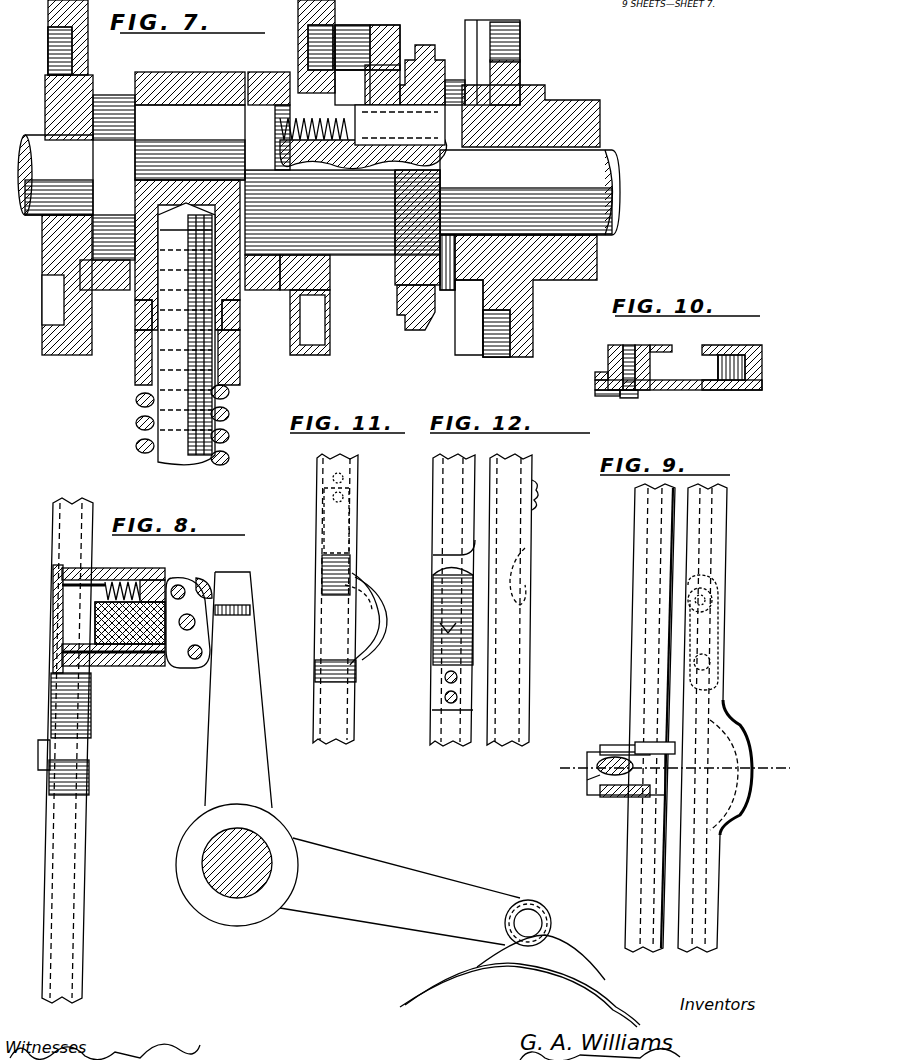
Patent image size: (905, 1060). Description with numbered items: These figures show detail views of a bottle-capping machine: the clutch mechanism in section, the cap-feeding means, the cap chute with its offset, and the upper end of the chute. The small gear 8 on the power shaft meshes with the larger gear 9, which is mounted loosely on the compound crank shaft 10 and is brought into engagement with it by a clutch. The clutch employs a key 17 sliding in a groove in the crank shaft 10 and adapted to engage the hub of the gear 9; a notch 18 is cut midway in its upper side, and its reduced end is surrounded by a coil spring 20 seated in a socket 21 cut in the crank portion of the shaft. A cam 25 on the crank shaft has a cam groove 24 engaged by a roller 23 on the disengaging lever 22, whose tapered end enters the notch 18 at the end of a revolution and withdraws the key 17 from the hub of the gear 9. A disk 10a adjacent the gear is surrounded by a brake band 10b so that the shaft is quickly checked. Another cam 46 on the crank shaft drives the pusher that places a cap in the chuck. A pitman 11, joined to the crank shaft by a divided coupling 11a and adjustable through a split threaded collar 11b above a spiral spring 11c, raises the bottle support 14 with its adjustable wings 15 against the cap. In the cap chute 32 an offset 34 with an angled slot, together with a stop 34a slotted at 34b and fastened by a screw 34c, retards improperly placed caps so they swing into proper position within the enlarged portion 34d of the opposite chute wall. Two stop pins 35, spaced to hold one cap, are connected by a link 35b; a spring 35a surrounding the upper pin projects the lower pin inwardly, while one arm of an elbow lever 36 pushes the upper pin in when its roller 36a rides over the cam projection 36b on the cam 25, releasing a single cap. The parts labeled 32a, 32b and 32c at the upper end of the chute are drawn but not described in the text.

In FIG. 8, the small gear 8 is at (245, 852).
In FIG. 7, the larger gear 9 is at (527, 125).
In FIG. 7, the compound crank shaft 10 is at (319, 180).
In FIG. 9, the compound crank shaft 10 is at (585, 764).
In FIG. 7, the disk 10a is at (392, 295).
In FIG. 7, the brake band 10b is at (420, 322).
In FIG. 7, the pitman 11 is at (170, 450).
In FIG. 7, the divided coupling 11a is at (200, 70).
In FIG. 7, the split threaded collar 11b is at (135, 325).
In FIG. 7, the spiral spring 11c is at (230, 408).
In FIG. 7, the bottle support 14 is at (345, 80).
In FIG. 7, the adjustable wings 15 is at (60, 54).
In FIG. 7, the key 17 is at (495, 95).
In FIG. 7, the notch 18 is at (522, 70).
In FIG. 7, the coil spring 20 is at (300, 92).
In FIG. 7, the socket 21 is at (290, 98).
In FIG. 7, the disengaging lever 22 is at (410, 40).
In FIG. 7, the roller 23 is at (375, 25).
In FIG. 7, the cam groove 24 is at (310, 322).
In FIG. 7, the cam 25 is at (305, 270).
In FIG. 8, the cam 25 is at (477, 996).
In FIG. 11, the cap chute 32 is at (352, 522).
In FIG. 12, the cap chute 32 is at (542, 600).
In FIG. 9, the cap chute 32 is at (680, 537).
In FIG. 11, the bar block 32a is at (324, 566).
In FIG. 11, the spring 32b is at (365, 615).
In FIG. 11, the lug 32c is at (440, 630).
In FIG. 12, the lug 32c is at (530, 552).
In FIG. 10, the offset 34 is at (678, 367).
In FIG. 9, the offset 34 is at (655, 790).
In FIG. 10, the stop 34a is at (606, 378).
In FIG. 9, the stop 34a is at (638, 750).
In FIG. 10, the slot 34b is at (612, 392).
In FIG. 9, the slot 34b is at (600, 772).
In FIG. 10, the screw 34c is at (630, 398).
In FIG. 9, the screw 34c is at (615, 790).
In FIG. 10, the enlarged portion 34d is at (755, 338).
In FIG. 9, the enlarged portion 34d is at (715, 745).
In FIG. 9, the stop pins 35 is at (712, 598).
In FIG. 8, the stop pins 35 is at (55, 592).
In FIG. 8, the spring 35a is at (125, 582).
In FIG. 8, the link 35b is at (205, 568).
In FIG. 8, the elbow lever 36 is at (362, 758).
In FIG. 8, the roller 36a is at (525, 920).
In FIG. 8, the cam projection 36b is at (560, 968).
In FIG. 7, the cam 46 is at (92, 62).